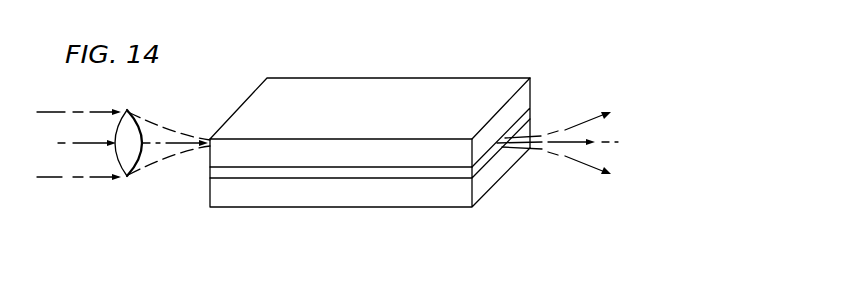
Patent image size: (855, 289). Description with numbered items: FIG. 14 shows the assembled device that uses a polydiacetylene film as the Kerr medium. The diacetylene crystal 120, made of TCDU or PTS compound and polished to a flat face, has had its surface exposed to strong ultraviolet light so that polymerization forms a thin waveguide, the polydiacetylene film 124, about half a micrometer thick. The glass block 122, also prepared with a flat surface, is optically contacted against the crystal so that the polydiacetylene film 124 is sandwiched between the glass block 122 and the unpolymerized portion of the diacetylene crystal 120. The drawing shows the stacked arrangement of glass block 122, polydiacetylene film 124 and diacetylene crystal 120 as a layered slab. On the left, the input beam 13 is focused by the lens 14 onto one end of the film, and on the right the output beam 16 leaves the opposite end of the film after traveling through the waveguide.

The input beam 13 is at (62, 171).
The lens 14 is at (131, 126).
The output beam 16 is at (608, 137).
The diacetylene crystal 120 is at (478, 193).
The glass block 122 is at (525, 93).
The polydiacetylene film 124 is at (525, 118).